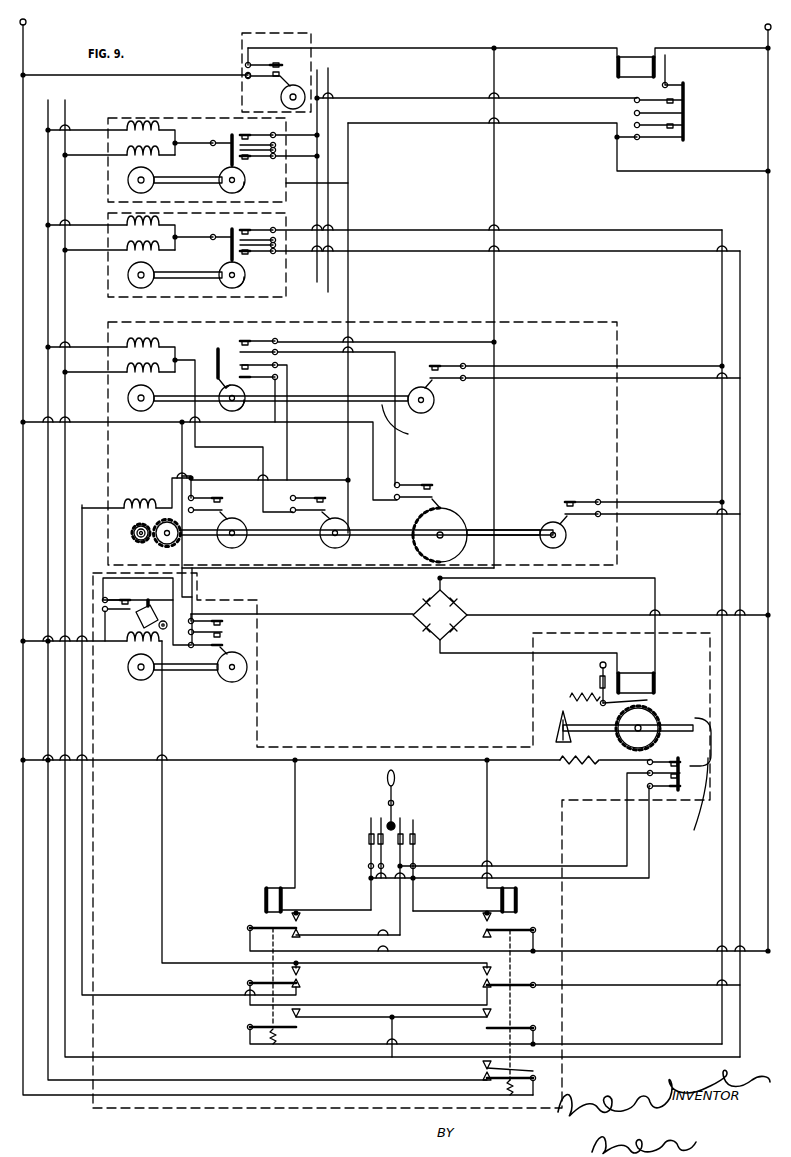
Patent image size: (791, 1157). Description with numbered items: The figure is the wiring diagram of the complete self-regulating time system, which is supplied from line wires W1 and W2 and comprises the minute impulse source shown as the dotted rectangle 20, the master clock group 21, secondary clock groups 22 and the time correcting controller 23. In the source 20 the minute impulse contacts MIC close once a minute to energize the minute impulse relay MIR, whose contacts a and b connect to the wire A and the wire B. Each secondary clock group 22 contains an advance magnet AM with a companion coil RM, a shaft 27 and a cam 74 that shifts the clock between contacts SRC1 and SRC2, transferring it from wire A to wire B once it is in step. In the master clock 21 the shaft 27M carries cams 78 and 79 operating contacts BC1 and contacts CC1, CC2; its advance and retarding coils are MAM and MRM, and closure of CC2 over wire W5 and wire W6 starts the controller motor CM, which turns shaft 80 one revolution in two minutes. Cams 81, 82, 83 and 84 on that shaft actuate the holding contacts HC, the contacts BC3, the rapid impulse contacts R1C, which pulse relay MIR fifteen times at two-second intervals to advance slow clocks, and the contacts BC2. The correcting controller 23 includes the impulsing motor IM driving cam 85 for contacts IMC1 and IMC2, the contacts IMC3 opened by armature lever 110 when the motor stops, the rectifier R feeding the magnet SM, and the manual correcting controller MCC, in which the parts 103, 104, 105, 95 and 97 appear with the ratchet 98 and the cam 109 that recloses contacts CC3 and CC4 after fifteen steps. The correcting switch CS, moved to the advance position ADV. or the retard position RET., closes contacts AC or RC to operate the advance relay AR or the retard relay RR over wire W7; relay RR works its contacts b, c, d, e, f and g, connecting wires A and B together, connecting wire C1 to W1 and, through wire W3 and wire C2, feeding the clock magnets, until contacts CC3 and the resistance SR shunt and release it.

The line wire W1 is at (23, 61).
The line wire W2 is at (764, 29).
The wire W3 is at (300, 1097).
The wire W5 is at (238, 424).
The wire W6 is at (290, 417).
The wire W7 is at (232, 763).
The minute impulse contacts MIC is at (262, 62).
The minute impulse source 20 is at (310, 34).
The wire A is at (327, 79).
The wire B is at (330, 89).
The advance magnet AM is at (148, 127).
The return magnet coil RM is at (126, 160).
The contacts SRC1 is at (241, 134).
The contacts SRC2 is at (240, 160).
The shaft 27 is at (215, 176).
The cam 74 is at (224, 188).
The secondary clock groups 22 is at (286, 218).
The minute impulse relay MIR is at (637, 60).
The contacts a is at (686, 107).
The contacts b is at (686, 133).
The master clock group 21 is at (603, 323).
The advance coil MAM is at (112, 347).
The retarding coil MRM is at (127, 376).
The contacts CC1 is at (240, 342).
The contacts CC2 is at (279, 373).
The cam 79 is at (243, 394).
The cam 78 is at (434, 399).
The shaft 27M is at (409, 425).
The contacts BC1 is at (440, 363).
The controller motor CM is at (145, 500).
The holding contacts HC is at (228, 490).
The contacts BC3 is at (311, 492).
The rapid impulse contacts R1C is at (431, 489).
The cam 83 is at (455, 519).
The shaft 80 is at (515, 530).
The contacts BC2 is at (582, 500).
The cam 84 is at (567, 541).
The cam 81 is at (233, 549).
The cam 82 is at (333, 549).
The contacts IMC3 is at (146, 611).
The armature lever 110 is at (168, 618).
The contacts IMC1 is at (224, 628).
The contacts IMC2 is at (224, 646).
The impulsing motor IM is at (133, 656).
The cam 85 is at (233, 683).
The time correcting controller 23 is at (256, 736).
The rectifier R is at (418, 619).
The contact 103 is at (600, 662).
The magnet SM is at (633, 673).
The pawl lever 104 is at (640, 700).
The spring 105 is at (582, 694).
The manual correcting controller MCC is at (502, 685).
The detent pawl 97 is at (553, 722).
The ratchet wheel 95 is at (652, 722).
The cam 109 is at (712, 738).
The resistance SR is at (565, 766).
The ratchet 98 is at (635, 743).
The contacts CC4 is at (665, 792).
The contacts CC3 is at (700, 772).
The retard position RET. is at (352, 783).
The advance position ADV. is at (435, 783).
The correcting switch CS is at (384, 793).
The contacts AC is at (368, 838).
The contacts RC is at (415, 836).
The advance relay AR is at (264, 903).
The retard relay RR is at (518, 903).
The contacts g is at (304, 916).
The contacts f is at (306, 934).
The contacts e is at (300, 972).
The contacts d is at (300, 986).
The contacts c is at (300, 1026).
The wire C1 is at (178, 1057).
The wire C2 is at (207, 1082).